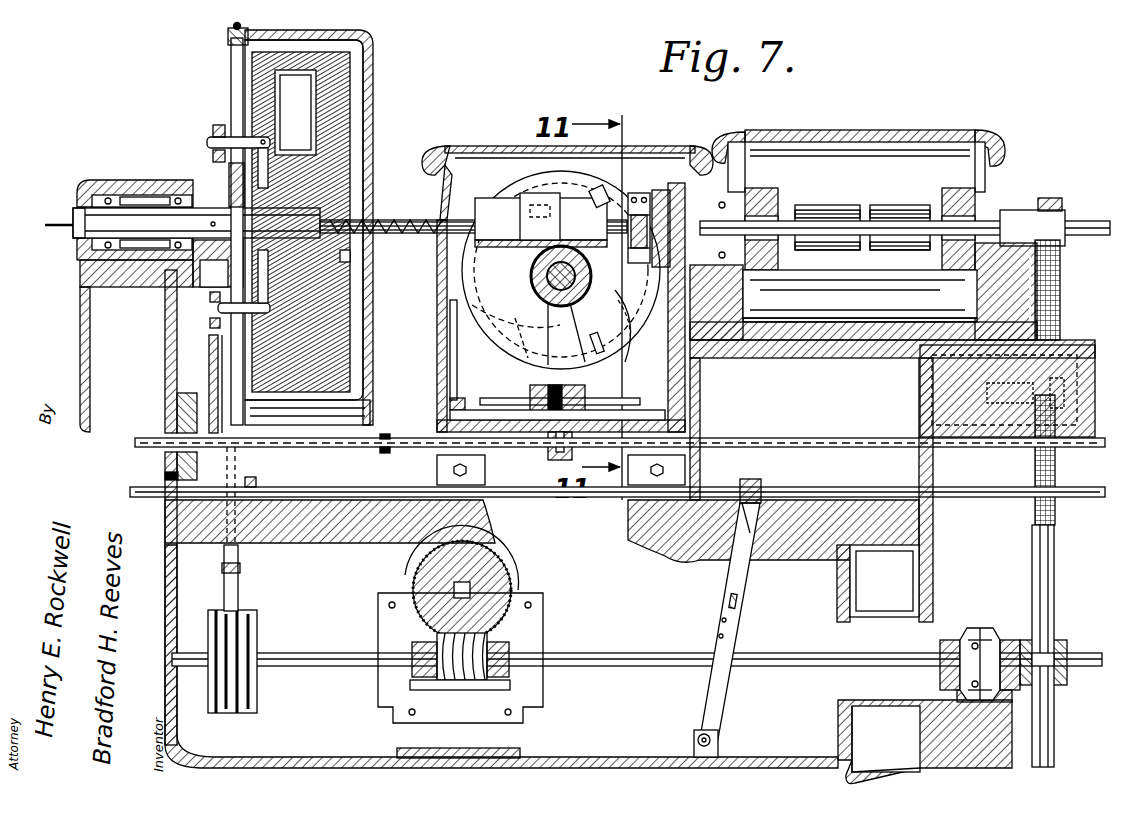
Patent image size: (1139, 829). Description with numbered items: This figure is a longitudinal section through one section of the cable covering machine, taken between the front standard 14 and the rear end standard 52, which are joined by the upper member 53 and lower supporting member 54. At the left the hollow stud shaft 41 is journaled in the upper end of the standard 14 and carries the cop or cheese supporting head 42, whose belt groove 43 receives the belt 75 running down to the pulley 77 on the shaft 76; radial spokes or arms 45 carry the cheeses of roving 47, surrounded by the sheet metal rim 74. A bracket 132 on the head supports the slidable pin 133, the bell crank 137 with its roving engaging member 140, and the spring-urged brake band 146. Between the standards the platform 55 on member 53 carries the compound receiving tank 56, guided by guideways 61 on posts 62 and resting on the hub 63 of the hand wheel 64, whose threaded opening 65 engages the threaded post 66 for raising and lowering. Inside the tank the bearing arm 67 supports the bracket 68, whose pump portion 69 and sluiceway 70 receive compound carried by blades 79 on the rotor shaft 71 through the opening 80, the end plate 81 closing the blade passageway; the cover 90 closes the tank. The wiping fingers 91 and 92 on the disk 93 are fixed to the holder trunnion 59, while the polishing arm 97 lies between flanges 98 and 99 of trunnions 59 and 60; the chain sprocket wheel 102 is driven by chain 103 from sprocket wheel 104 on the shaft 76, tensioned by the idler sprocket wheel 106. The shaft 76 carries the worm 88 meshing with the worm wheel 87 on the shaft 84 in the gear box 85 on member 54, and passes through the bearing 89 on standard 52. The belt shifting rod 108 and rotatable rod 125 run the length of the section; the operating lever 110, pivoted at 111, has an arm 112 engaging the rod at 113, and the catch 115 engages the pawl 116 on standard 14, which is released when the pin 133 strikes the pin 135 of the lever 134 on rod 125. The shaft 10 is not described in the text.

The drive shaft end 10 is at (52, 223).
The standard 14 is at (91, 342).
The hollow stud shaft 41 is at (125, 222).
The cop or cheese supporting head 42 is at (226, 195).
The belt groove 43 is at (230, 40).
The spokes or arms 45 is at (234, 94).
The roving 47 is at (390, 218).
The rear end standard 52 is at (900, 575).
The upper longitudinal member 53 is at (382, 536).
The lower supporting member 54 is at (330, 760).
The platform 55 is at (500, 432).
The compound receiving tank 56 is at (437, 311).
The holder trunnion 59 is at (730, 195).
The holder trunnion 60 is at (995, 195).
The guideways 61 is at (437, 355).
The posts 62 is at (437, 378).
The hub 63 is at (540, 436).
The hand wheel 64 is at (605, 406).
The threaded opening 65 is at (580, 418).
The threaded post 66 is at (552, 455).
The bearing arm 67 is at (589, 278).
The bracket 68 is at (580, 266).
The pump portion 69 is at (533, 193).
The sluiceway 70 is at (483, 198).
The shaft 71 is at (573, 297).
The sheet metal rim or flange 74 is at (366, 52).
The belt 75 is at (241, 26).
The shaft 76 is at (315, 655).
The pulley 77 is at (257, 632).
The blades 79 is at (600, 344).
The opening 80 is at (556, 212).
The end plate 81 is at (631, 305).
The shaft 84 is at (480, 589).
The gear box 85 is at (525, 620).
The worm wheel 87 is at (440, 560).
The worm 88 is at (500, 678).
The bearing 89 is at (972, 636).
The cover 90 is at (486, 148).
The spring pressed finger 91 is at (640, 210).
The spring pressed finger 92 is at (640, 264).
The disk 93 is at (662, 190).
The longitudinally directed arm 97 is at (862, 216).
The flange 98 is at (776, 202).
The flange 99 is at (948, 202).
The chain sprocket wheel 102 is at (1060, 200).
The chain 103 is at (1058, 322).
The sprocket wheel 104 is at (1050, 592).
The idler sprocket wheel 106 is at (1032, 425).
The belt shifting rod 108 is at (409, 489).
The shifting bar operating lever 110 is at (740, 636).
The pivot 111 is at (711, 739).
The arm 112 is at (750, 523).
The engagement point 113 is at (761, 488).
The catch 115 is at (257, 484).
The slidable pawl 116 is at (165, 478).
The rotatable rod 125 is at (400, 440).
The bracket 132 is at (213, 324).
The slidable pin 133 is at (213, 298).
The lever 134 is at (210, 366).
The pin 135 is at (210, 336).
The bell crank 137 is at (270, 293).
The roving engaging member 140 is at (345, 256).
The brake band 146 is at (300, 108).